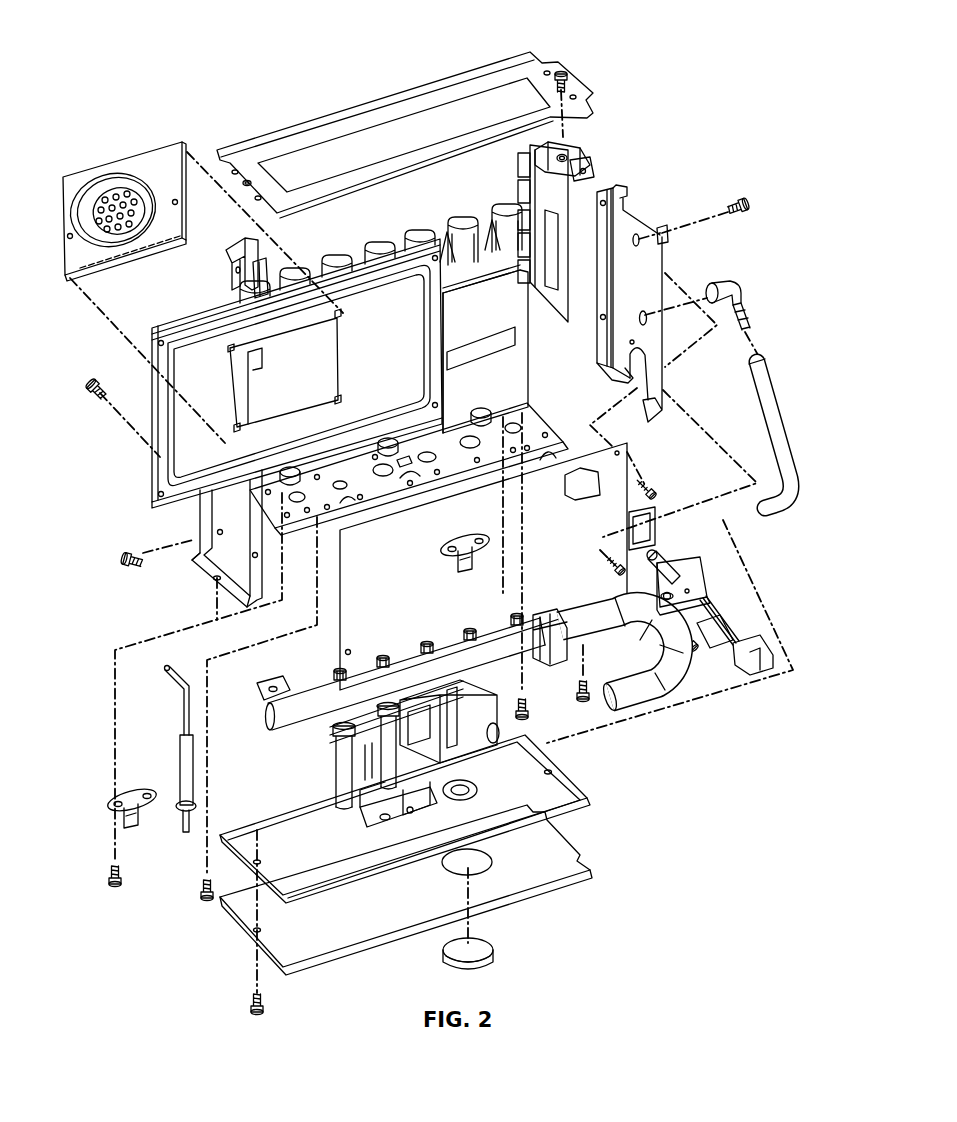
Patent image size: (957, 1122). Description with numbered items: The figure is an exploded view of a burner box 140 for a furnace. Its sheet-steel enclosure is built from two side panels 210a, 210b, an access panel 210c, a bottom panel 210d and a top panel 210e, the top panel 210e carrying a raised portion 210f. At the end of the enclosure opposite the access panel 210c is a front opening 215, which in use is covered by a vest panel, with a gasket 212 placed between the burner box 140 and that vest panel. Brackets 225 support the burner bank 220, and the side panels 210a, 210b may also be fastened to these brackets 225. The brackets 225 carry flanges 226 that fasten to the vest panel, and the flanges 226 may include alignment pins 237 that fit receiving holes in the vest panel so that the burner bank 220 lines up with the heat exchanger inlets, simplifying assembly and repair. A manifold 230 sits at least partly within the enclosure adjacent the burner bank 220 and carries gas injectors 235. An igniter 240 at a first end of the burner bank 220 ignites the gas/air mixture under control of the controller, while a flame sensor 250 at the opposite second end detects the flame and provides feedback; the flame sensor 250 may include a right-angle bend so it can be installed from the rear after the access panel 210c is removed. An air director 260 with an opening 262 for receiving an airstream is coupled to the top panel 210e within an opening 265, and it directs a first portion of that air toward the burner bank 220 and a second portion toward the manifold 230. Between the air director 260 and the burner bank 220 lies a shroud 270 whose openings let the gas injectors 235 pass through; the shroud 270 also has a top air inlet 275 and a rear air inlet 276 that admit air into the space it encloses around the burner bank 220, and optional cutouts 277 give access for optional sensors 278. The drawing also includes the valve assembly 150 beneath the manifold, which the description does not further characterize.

The burner box 140 is at (150, 58).
The gas valve assembly 150 is at (337, 760).
The gasket 212 is at (568, 74).
The front opening 215 is at (322, 88).
The burner bank 220 is at (347, 250).
The brackets 225 is at (600, 195).
The flanges 226 is at (563, 140).
The manifold 230 is at (567, 607).
The gas injectors 235 is at (377, 653).
The alignment pins 237 is at (577, 163).
The igniter 240 is at (687, 570).
The flame sensor 250 is at (170, 677).
The air director 260 is at (148, 157).
The opening 262 is at (104, 171).
The opening 265 is at (327, 367).
The shroud 270 is at (562, 437).
The top air inlet 275 is at (483, 360).
The rear air inlet 276 is at (374, 504).
The cutouts 277 is at (480, 413).
The sensors 278 is at (455, 545).
The side panel 210a is at (660, 258).
The side panel 210b is at (203, 580).
The access panel 210c is at (550, 888).
The bottom panel 210d is at (458, 597).
The top panel 210e is at (153, 477).
The raised portion 210f is at (197, 352).